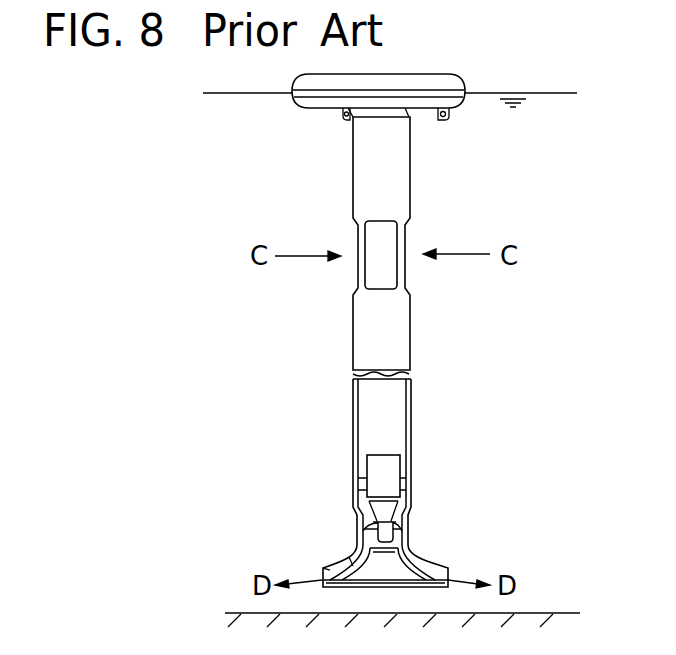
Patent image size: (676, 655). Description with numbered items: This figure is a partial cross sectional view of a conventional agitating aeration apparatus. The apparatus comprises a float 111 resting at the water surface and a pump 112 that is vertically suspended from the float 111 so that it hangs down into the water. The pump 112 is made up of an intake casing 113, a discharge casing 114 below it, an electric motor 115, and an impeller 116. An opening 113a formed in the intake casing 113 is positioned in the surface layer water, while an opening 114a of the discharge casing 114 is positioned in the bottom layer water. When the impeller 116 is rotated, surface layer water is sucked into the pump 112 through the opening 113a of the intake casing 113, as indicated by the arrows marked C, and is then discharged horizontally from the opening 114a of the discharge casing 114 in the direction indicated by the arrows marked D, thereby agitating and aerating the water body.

The float 111 is at (442, 79).
The pump 112 is at (450, 363).
The intake casing 113 is at (434, 248).
The opening of the intake casing 113a is at (388, 247).
The discharge casing 114 is at (370, 483).
The opening of the discharge casing 114a is at (322, 578).
The electric motor 115 is at (393, 472).
The impeller 116 is at (405, 530).